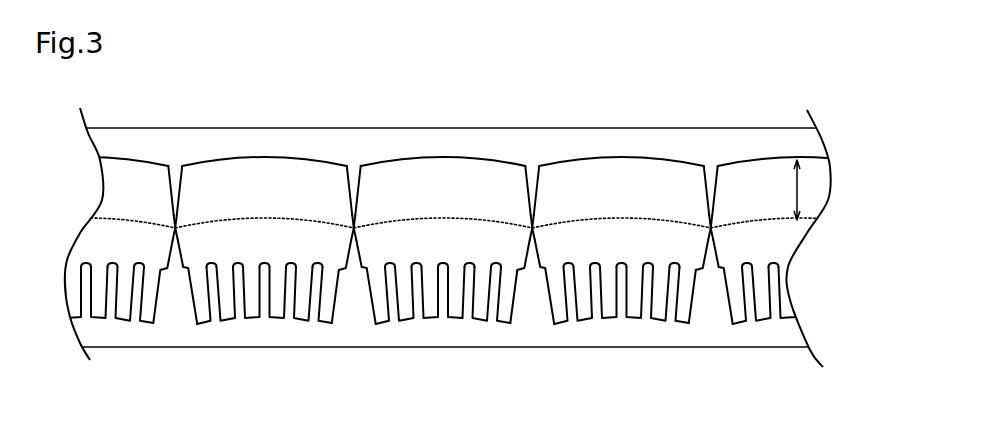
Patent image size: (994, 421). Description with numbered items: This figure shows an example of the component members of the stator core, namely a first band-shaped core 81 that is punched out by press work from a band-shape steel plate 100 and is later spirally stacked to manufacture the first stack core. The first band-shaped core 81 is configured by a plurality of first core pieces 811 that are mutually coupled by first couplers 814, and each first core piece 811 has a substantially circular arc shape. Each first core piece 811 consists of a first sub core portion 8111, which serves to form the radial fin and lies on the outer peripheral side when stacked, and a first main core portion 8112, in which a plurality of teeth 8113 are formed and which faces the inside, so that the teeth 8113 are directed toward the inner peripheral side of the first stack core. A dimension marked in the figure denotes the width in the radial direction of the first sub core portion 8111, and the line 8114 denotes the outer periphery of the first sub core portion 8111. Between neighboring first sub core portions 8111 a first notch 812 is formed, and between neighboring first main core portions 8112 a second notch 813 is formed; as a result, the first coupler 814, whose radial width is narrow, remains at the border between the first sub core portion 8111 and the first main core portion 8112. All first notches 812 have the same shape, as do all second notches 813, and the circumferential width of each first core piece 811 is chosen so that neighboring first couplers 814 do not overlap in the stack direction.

The band-shape steel plate 100 is at (668, 128).
The first band-shaped core 81 is at (811, 190).
The first core piece 811 is at (473, 241).
The first sub core portion 8111 is at (834, 160).
The first main core portion 8112 is at (823, 318).
The teeth 8113 is at (427, 310).
The outer periphery of the first sub core portion 8114 is at (387, 163).
The first notch 812 is at (349, 155).
The second notch 813 is at (354, 265).
The first coupler 814 is at (525, 220).